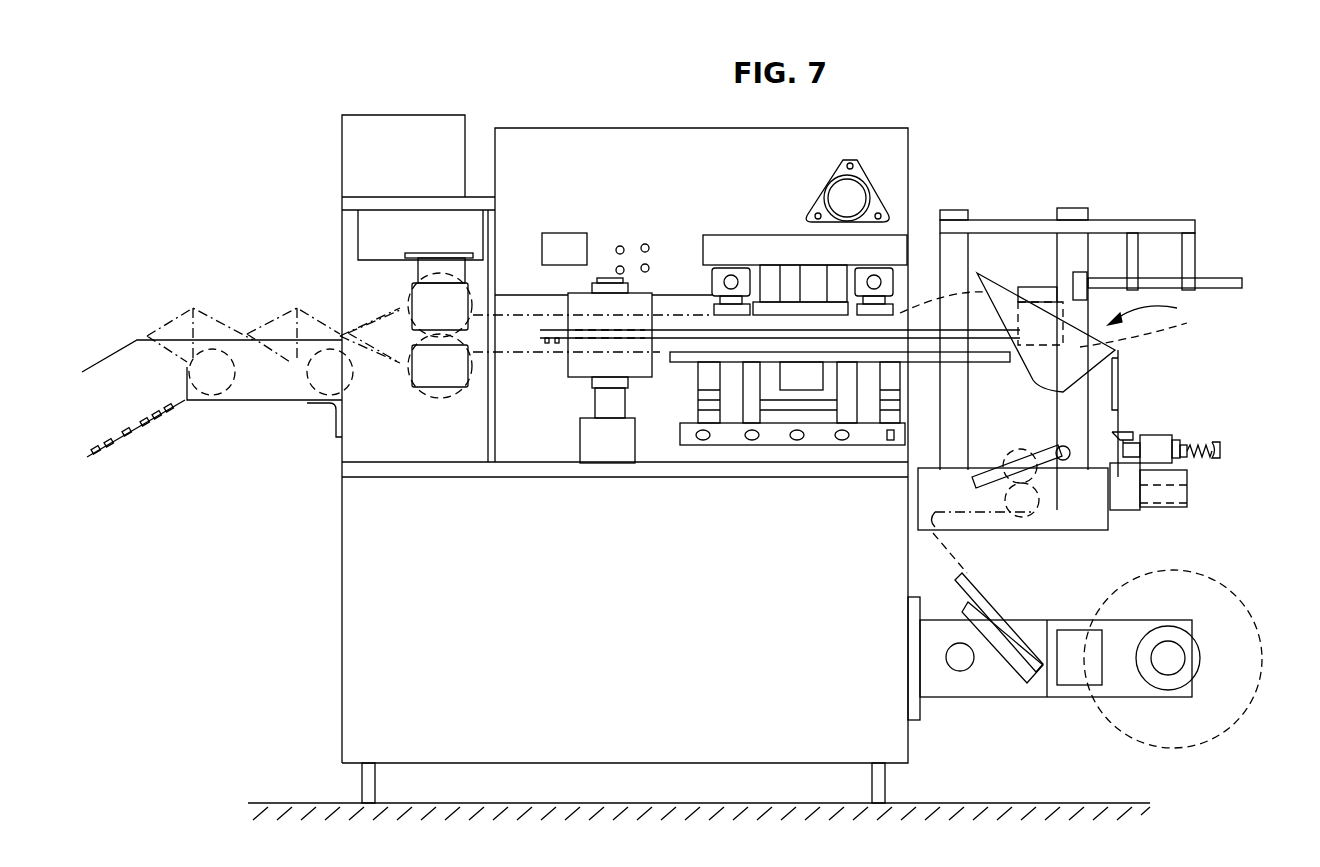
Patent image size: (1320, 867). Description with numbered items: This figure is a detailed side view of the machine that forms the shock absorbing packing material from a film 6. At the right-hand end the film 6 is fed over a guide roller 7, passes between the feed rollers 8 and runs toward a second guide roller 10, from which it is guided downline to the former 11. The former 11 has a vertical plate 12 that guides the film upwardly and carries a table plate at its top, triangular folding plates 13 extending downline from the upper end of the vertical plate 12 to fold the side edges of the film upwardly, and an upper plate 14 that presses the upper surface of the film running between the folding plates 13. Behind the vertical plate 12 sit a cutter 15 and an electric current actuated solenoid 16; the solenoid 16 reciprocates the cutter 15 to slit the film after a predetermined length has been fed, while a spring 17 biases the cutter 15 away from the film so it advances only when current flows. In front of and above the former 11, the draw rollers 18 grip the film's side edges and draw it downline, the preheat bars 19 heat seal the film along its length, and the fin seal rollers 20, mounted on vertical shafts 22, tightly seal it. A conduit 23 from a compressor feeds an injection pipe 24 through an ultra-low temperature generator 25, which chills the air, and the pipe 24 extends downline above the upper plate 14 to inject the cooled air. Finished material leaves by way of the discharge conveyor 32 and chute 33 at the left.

The film 6 is at (1247, 672).
The guide roller 7 is at (937, 522).
The feed roller 8 is at (1033, 507).
The second guide roller 10 is at (1117, 480).
The former 11 is at (1152, 312).
The vertical plate 12 is at (1108, 383).
The triangular folding plate 13 is at (1000, 290).
The upper plate 14 is at (957, 357).
The cutter 15 is at (1123, 430).
The solenoid 16 is at (1158, 438).
The spring 17 is at (1202, 440).
The draw roller 18 is at (890, 315).
The preheat bar 19 is at (798, 303).
The fin seal roller 20 is at (713, 313).
The vertical shaft 22 is at (618, 402).
The conduit 23 is at (1228, 275).
The injection pipe 24 is at (990, 340).
The ultra-low temperature generator 25 is at (1059, 319).
The discharge conveyor 32 is at (268, 400).
The chute 33 is at (103, 450).